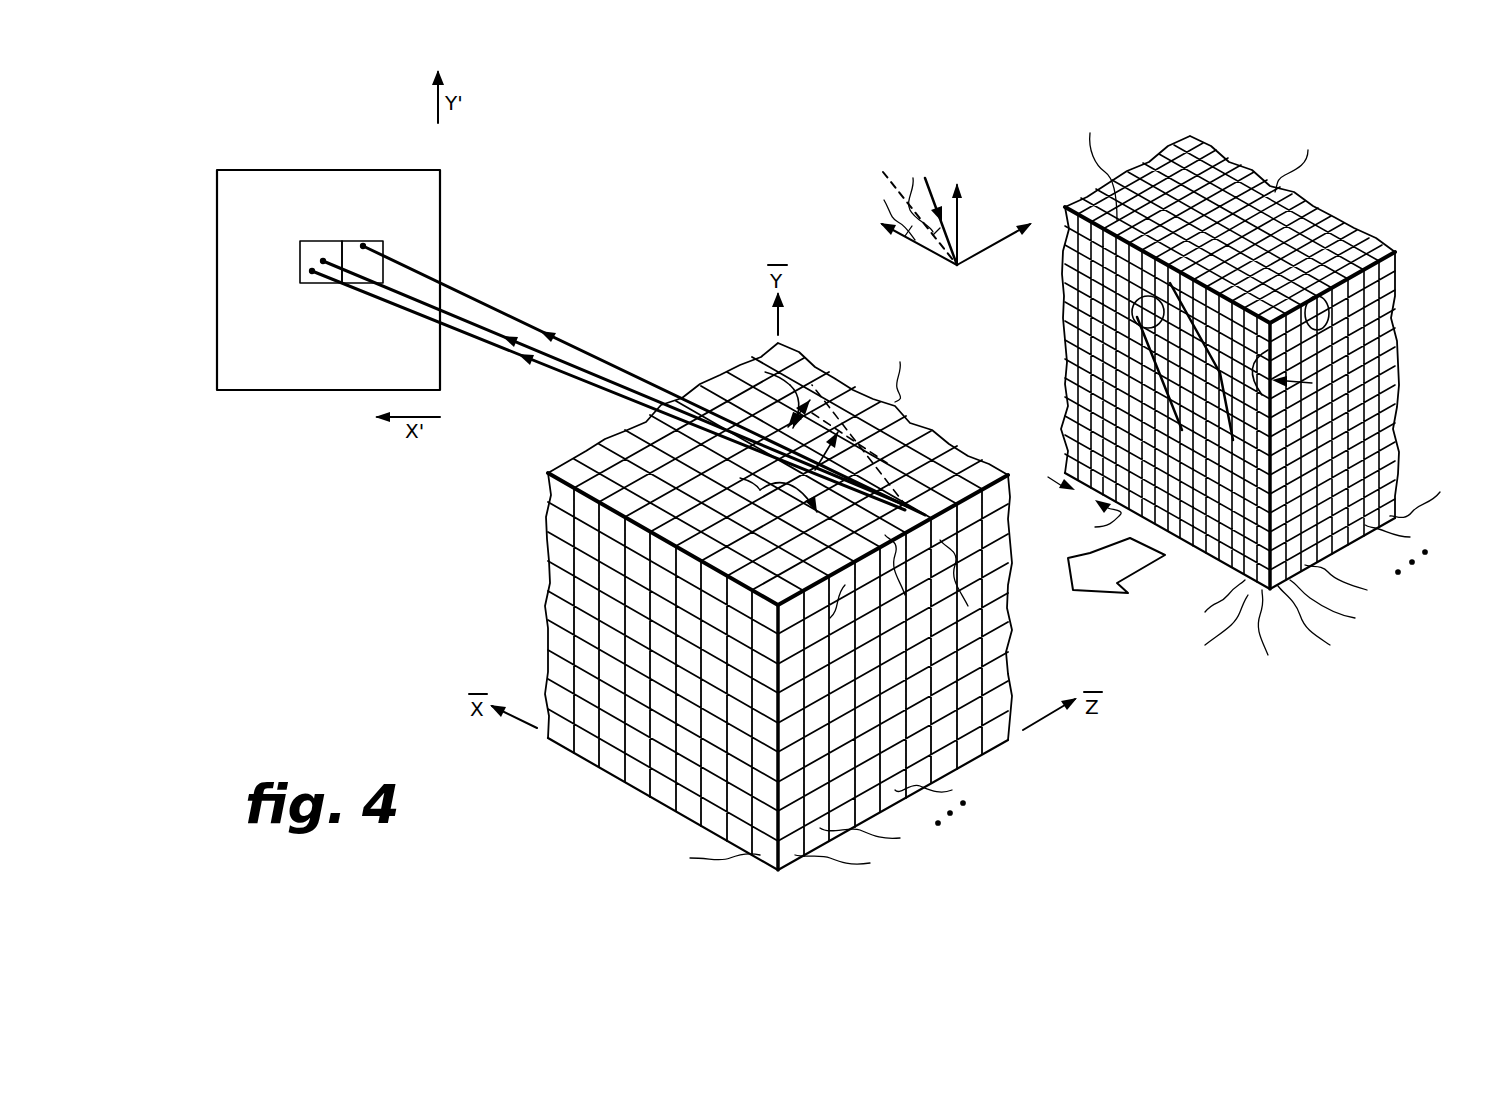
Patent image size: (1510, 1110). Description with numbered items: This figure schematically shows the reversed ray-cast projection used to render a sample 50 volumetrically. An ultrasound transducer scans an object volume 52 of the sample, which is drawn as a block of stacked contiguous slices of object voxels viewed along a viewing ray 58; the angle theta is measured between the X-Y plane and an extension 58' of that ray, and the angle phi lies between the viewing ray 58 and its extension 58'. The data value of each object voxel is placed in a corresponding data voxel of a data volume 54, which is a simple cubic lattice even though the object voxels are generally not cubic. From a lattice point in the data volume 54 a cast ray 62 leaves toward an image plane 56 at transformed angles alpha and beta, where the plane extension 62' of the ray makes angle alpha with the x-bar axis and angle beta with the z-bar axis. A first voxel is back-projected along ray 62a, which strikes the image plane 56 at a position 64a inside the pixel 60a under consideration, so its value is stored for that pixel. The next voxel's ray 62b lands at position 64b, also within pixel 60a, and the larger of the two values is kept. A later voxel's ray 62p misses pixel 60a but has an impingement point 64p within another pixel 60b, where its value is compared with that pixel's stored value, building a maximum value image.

The sample 50 is at (1126, 570).
The object volume 52 is at (1060, 312).
The data volume 54 is at (945, 435).
The image plane 56 is at (233, 170).
The viewing ray 58 is at (960, 193).
The extension of viewing ray 58' is at (904, 204).
The image plane pixel 60a is at (308, 241).
The image plane pixel 60b is at (350, 241).
The cast ray 62 is at (618, 374).
The ray 62a is at (598, 386).
The ray 62b is at (600, 378).
The ray 62p is at (562, 340).
The plane extension of projected ray 62' is at (812, 413).
The impingement position 64a is at (312, 271).
The impingement position 64b is at (323, 261).
The impingement point 64p is at (363, 246).